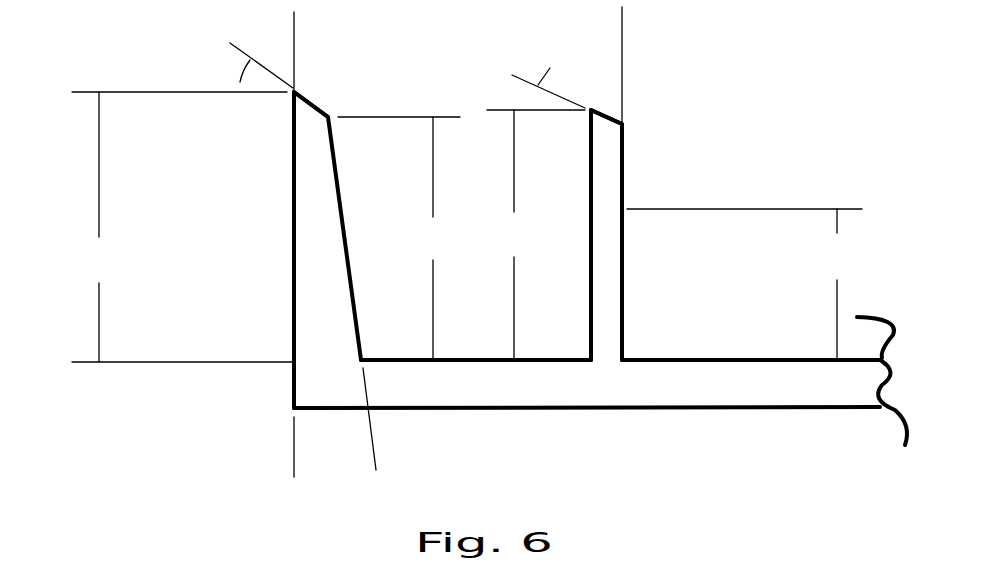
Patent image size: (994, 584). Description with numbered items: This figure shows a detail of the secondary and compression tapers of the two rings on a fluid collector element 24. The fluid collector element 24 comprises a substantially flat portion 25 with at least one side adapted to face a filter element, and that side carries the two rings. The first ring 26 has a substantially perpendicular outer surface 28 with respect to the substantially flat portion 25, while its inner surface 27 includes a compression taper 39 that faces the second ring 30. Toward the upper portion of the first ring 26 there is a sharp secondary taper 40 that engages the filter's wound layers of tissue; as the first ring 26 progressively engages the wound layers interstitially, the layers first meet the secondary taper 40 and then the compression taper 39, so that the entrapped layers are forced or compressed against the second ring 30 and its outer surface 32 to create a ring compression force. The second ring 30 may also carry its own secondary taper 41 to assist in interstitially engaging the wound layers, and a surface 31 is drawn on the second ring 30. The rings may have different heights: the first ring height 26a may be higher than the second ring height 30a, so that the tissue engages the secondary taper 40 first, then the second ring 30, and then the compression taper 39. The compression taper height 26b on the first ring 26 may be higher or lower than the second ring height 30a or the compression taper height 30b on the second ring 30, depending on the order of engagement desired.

The fluid collector element 24 is at (688, 345).
The substantially flat portion 25 is at (617, 406).
The first ring 26 is at (293, 307).
The first ring height 26a is at (182, 227).
The compression taper height 26b is at (433, 238).
The inner surface 27 is at (333, 140).
The outer surface 28 is at (293, 195).
The second ring 30 is at (623, 278).
The second ring height 30a is at (536, 235).
The compression taper height 30b is at (744, 284).
The rib side surface 31 is at (623, 345).
The outer surface 32 is at (590, 320).
The compression taper 39 is at (320, 43).
The secondary taper 40 is at (313, 102).
The secondary taper 41 is at (607, 113).